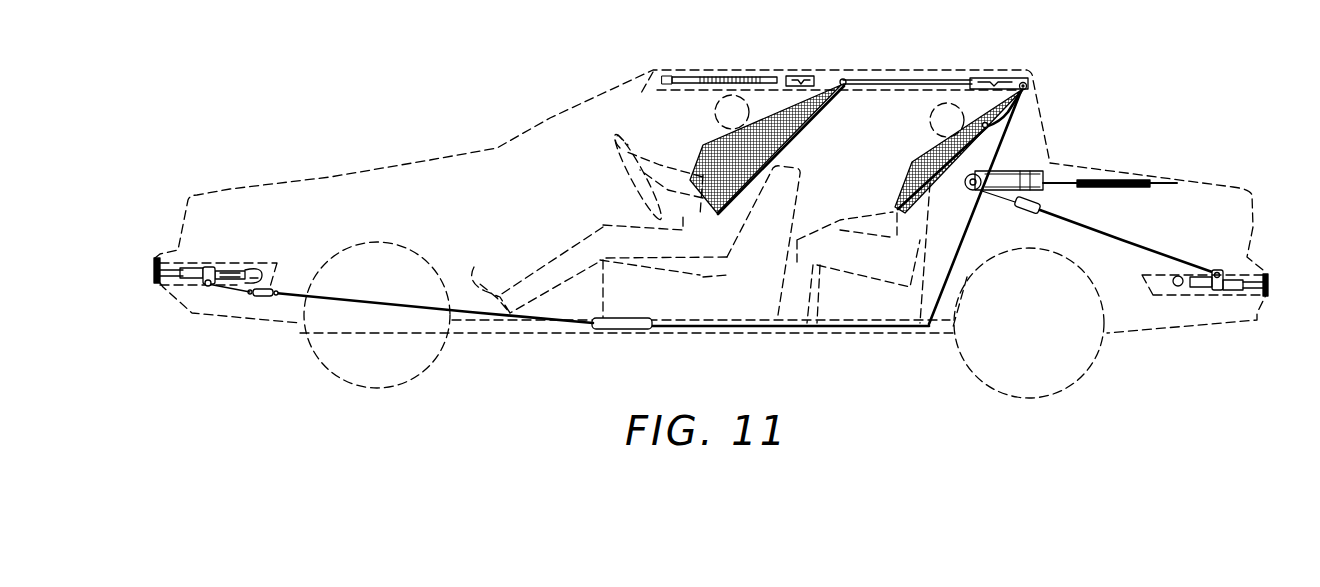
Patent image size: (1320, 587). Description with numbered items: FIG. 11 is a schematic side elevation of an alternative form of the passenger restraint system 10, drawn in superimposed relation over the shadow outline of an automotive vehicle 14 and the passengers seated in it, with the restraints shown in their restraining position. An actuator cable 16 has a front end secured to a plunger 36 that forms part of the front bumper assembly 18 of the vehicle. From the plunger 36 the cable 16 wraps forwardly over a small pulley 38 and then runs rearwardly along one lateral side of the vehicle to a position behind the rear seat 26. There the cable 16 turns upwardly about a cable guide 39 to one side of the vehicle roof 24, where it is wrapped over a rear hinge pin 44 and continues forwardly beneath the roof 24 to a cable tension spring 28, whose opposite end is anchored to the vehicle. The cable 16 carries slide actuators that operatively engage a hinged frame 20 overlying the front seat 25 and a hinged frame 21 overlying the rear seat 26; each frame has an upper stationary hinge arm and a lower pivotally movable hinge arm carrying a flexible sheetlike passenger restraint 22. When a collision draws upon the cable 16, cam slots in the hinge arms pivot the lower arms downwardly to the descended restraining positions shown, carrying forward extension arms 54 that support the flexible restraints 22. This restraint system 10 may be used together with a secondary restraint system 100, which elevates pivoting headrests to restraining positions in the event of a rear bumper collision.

The passenger restraint system 10 is at (1045, 97).
The automotive vehicle 14 is at (441, 157).
The actuator cable 16 is at (483, 317).
The front bumper assembly 18 is at (157, 252).
The hinged frame 20 is at (812, 74).
The hinged frame 21 is at (988, 80).
The flexible sheetlike passenger restraint 22 is at (697, 150).
The roof 24 is at (867, 70).
The front seat 25 is at (693, 307).
The rear seat 26 is at (873, 310).
The cable tension spring 28 is at (705, 77).
The plunger 36 is at (262, 270).
The pulley 38 is at (208, 287).
The cable guide 39 is at (932, 330).
The rear hinge pin 44 is at (1027, 82).
The forward extension arm 54 is at (790, 137).
The secondary restraint system 100 is at (1183, 203).